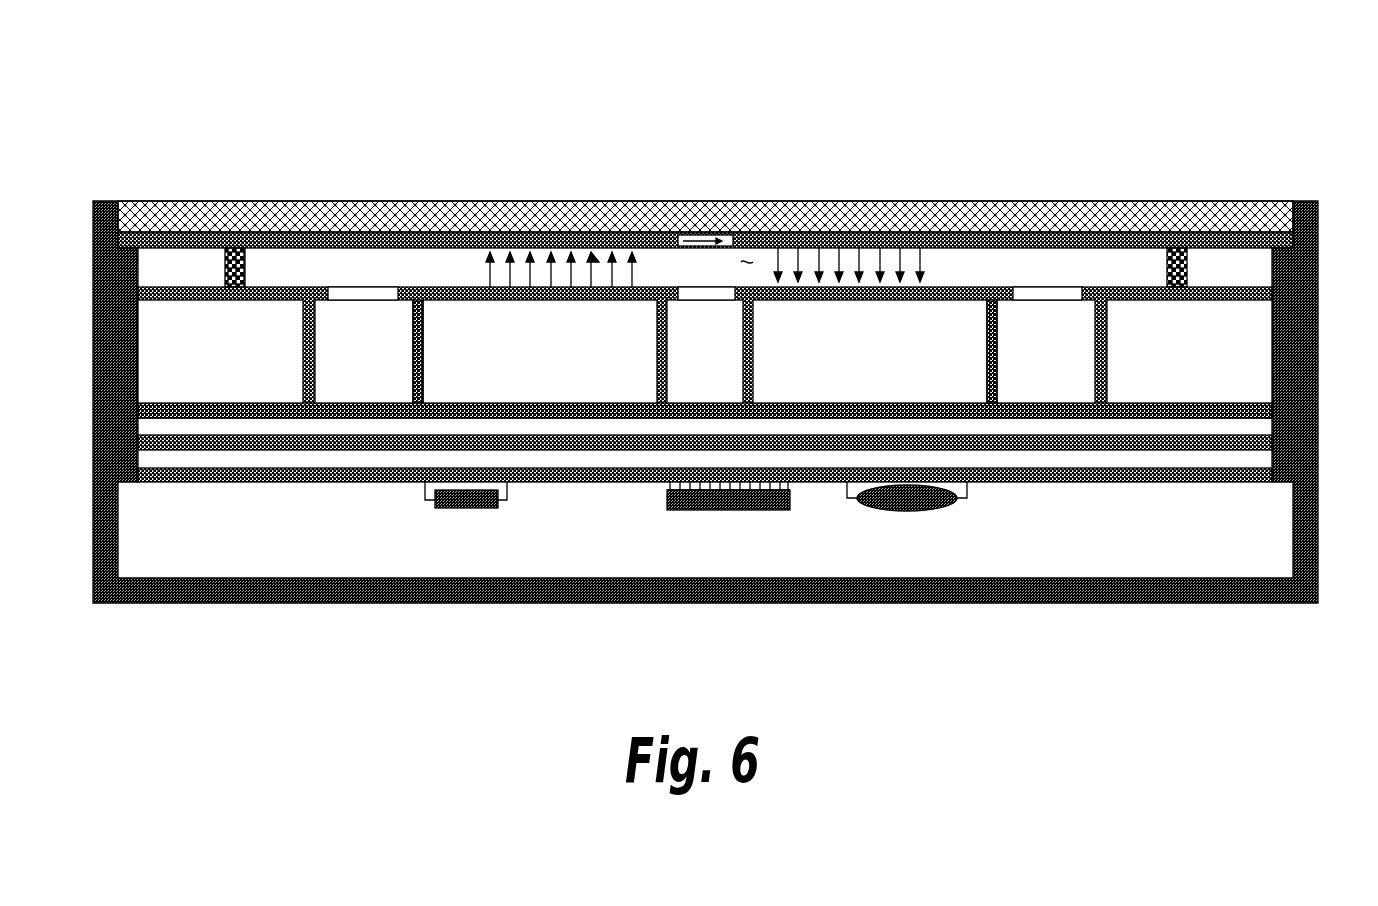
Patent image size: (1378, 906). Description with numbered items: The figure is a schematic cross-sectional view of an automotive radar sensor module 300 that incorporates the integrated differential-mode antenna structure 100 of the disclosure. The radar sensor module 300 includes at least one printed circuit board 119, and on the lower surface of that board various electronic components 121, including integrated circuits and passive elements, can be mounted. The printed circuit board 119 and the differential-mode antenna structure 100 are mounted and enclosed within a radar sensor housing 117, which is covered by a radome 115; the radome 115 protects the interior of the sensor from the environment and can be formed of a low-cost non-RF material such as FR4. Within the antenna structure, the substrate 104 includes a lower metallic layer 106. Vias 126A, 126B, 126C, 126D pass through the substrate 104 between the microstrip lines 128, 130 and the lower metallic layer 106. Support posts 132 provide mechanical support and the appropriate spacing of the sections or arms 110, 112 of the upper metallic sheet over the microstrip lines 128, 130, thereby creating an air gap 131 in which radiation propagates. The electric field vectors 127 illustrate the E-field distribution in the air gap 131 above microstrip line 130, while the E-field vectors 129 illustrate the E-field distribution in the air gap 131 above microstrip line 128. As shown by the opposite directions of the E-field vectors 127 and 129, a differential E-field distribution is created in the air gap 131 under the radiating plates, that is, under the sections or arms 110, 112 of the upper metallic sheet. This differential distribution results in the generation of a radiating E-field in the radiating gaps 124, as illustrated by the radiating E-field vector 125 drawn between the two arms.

The differential-mode antenna structure 100 is at (685, 373).
The radar sensor module 300 is at (685, 339).
The substrate 104 is at (247, 357).
The lower metallic layer 106 is at (1252, 410).
The section or arm of upper metallic sheet 110 is at (678, 170).
The section or arm of upper metallic sheet 112 is at (895, 228).
The radome 115 is at (157, 202).
The radar sensor housing 117 is at (190, 600).
The printed circuit board 119 is at (1185, 460).
The electronic components 121 is at (468, 505).
The radiating gaps 124 is at (680, 174).
The radiating E-field vector 125 is at (715, 233).
The via 126A is at (657, 385).
The via 126B is at (753, 383).
The via 126C is at (423, 318).
The via 126D is at (987, 323).
The electric field vectors 127 is at (482, 268).
The microstrip line 128 is at (990, 287).
The electric field vectors 129 is at (935, 265).
The microstrip line 130 is at (754, 270).
The air gap 131 is at (748, 258).
The support posts 132 is at (212, 262).